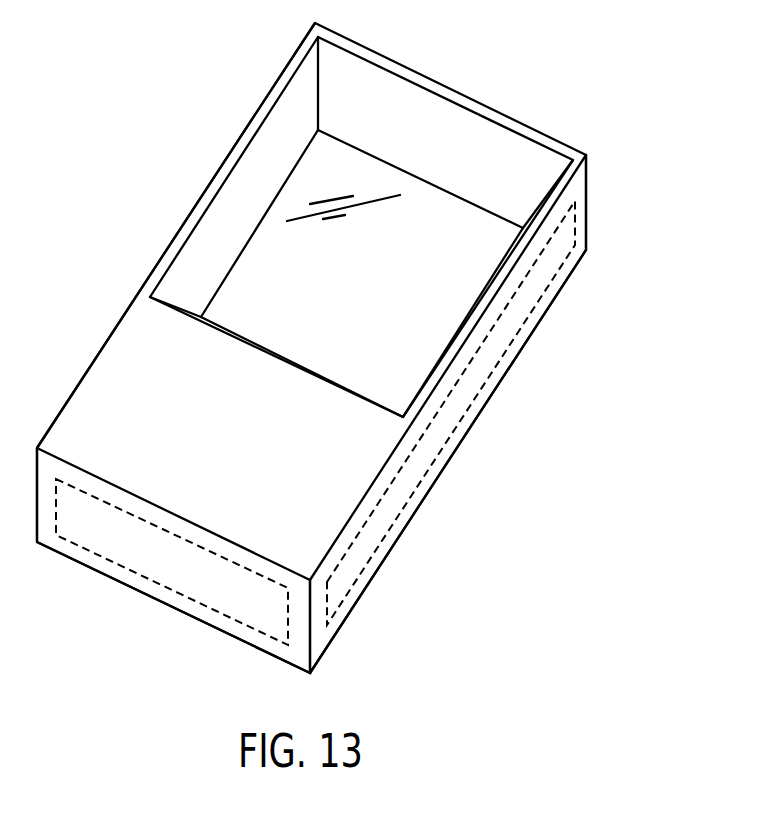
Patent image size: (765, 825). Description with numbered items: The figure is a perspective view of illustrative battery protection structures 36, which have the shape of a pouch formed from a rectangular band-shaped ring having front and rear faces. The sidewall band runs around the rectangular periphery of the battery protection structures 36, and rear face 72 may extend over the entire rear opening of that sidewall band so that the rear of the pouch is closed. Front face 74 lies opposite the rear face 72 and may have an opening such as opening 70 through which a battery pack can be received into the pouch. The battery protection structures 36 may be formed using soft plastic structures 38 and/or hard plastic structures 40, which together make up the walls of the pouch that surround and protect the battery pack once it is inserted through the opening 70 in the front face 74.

The battery protection structures 36 is at (598, 167).
The soft plastic structures 38 is at (572, 252).
The hard plastic structures 40 is at (190, 597).
The opening 70 is at (417, 215).
The rear face 72 is at (258, 248).
The front face 74 is at (97, 383).